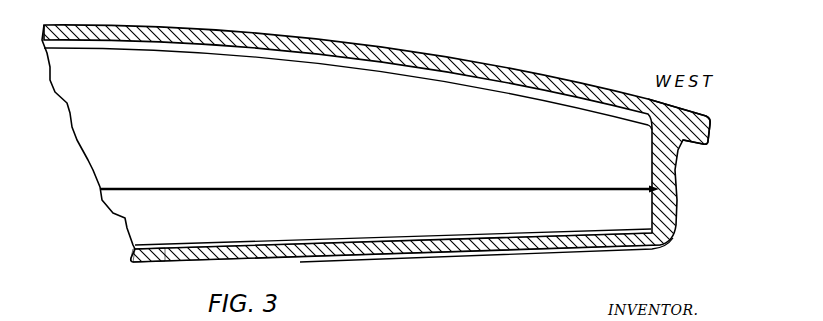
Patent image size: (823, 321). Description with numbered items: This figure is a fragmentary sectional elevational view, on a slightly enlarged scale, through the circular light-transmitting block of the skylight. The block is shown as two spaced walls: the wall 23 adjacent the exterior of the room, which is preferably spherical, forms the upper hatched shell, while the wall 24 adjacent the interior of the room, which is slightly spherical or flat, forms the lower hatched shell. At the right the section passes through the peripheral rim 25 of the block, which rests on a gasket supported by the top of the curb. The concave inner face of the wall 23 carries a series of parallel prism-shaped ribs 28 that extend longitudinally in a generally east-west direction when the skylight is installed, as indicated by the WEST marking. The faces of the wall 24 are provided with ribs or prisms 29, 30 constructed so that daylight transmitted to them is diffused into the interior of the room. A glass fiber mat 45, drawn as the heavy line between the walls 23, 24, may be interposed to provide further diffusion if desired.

The wall 23 is at (457, 63).
The prism-shaped ribs 28 is at (408, 76).
The peripheral rim 25 is at (692, 143).
The glass fiber mat 45 is at (388, 188).
The wall 24 is at (157, 263).
The ribs or prisms 29 is at (360, 248).
The ribs or prisms 30 is at (445, 255).